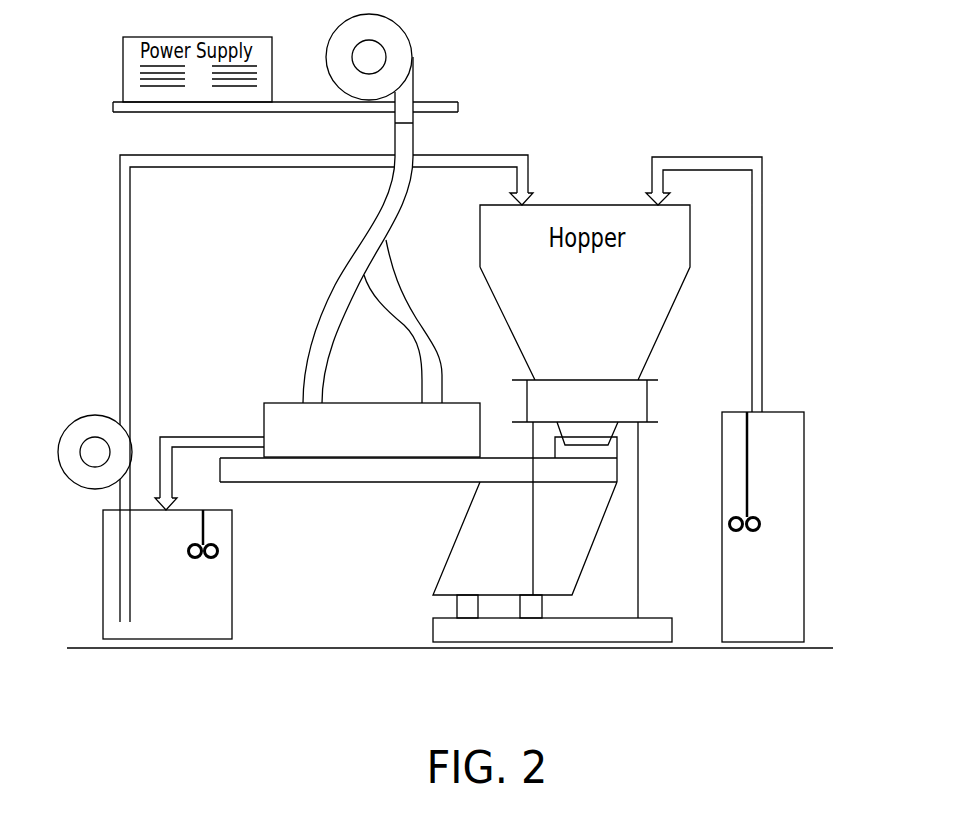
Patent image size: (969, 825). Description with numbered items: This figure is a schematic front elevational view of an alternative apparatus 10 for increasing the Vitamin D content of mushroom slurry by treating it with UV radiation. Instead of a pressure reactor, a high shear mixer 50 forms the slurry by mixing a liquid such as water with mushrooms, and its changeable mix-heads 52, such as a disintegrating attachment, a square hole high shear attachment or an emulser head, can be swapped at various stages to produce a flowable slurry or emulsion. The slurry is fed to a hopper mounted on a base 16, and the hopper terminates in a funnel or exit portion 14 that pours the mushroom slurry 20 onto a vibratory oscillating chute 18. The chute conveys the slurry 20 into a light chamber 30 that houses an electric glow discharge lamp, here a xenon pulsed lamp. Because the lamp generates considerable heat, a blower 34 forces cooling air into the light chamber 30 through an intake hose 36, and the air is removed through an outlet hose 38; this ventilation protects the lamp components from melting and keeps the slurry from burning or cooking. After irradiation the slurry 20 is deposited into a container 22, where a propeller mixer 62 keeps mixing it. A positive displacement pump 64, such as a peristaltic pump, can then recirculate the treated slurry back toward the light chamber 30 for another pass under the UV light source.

The apparatus 10 is at (672, 80).
The hopper outlet feeder 14 is at (620, 426).
The base 16 is at (630, 562).
The oscillating chute 18 is at (612, 470).
The mushroom slurry 20 is at (171, 436).
The container 22 is at (110, 551).
The light chamber 30 is at (275, 407).
The blower 34 is at (408, 50).
The intake hose 36 is at (394, 298).
The outlet hose 38 is at (334, 296).
The mixer 50 is at (772, 416).
The mix-heads 52 is at (749, 459).
The propeller mixer 62 is at (207, 528).
The positive displacement pump 64 is at (91, 425).